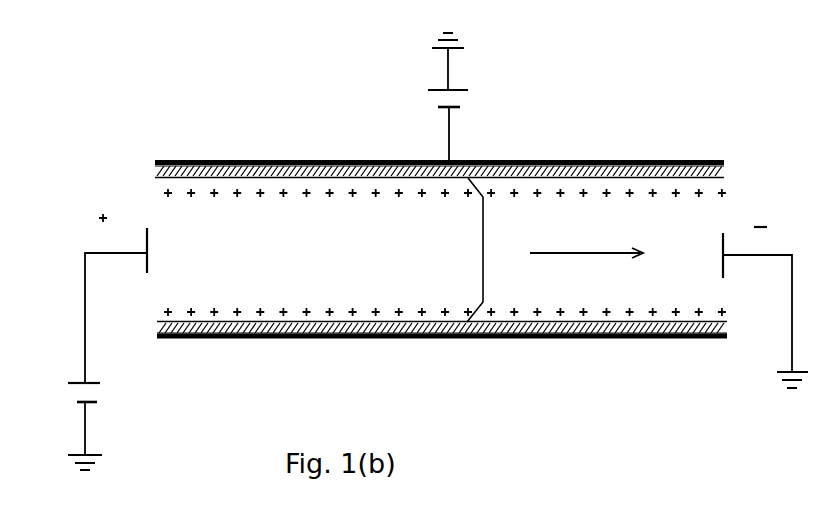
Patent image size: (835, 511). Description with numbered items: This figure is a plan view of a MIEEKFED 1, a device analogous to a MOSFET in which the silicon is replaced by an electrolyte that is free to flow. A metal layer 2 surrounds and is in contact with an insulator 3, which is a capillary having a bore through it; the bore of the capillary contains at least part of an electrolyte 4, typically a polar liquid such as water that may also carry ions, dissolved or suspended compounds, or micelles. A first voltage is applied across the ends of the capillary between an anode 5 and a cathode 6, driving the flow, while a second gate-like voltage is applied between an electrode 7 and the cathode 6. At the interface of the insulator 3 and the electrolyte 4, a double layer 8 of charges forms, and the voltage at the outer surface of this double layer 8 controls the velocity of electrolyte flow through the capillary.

The MIEEKFED 1 is at (391, 170).
The metal layer 2 is at (145, 163).
The insulator 3 is at (144, 176).
The electrolyte 4 is at (502, 250).
The anode 5 is at (99, 342).
The cathode 6 is at (754, 307).
The electrode 7 is at (458, 96).
The double layer 8 is at (445, 252).